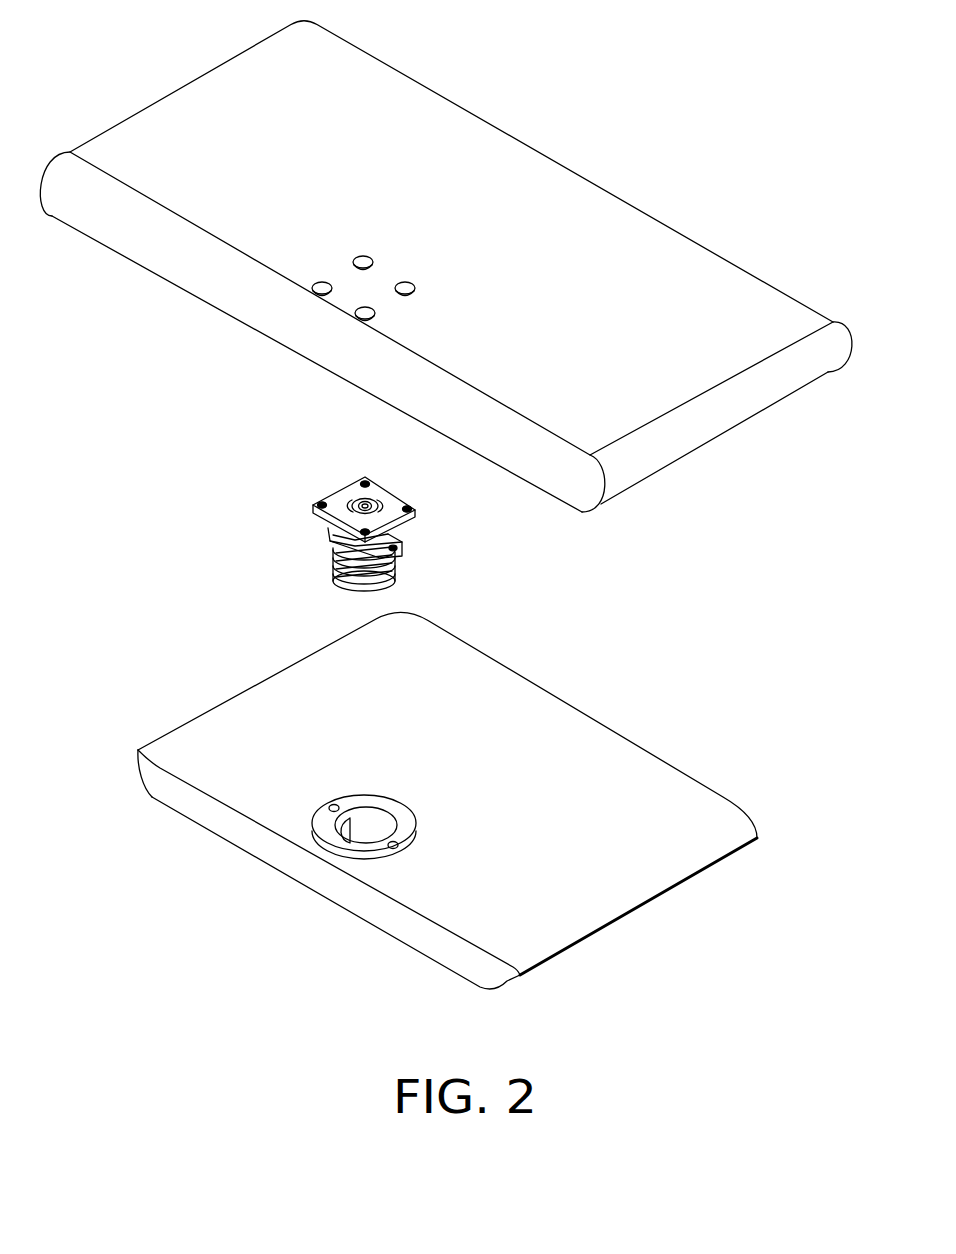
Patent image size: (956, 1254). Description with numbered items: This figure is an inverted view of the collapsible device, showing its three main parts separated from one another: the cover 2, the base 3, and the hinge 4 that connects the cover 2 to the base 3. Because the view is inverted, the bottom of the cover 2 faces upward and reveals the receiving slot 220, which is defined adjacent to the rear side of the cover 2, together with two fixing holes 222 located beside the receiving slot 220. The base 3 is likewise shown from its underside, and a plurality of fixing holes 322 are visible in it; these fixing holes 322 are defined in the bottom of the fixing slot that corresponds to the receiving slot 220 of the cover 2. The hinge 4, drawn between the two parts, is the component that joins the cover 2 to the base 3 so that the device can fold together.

The cover 2 is at (270, 662).
The base 3 is at (190, 47).
The hinge 4 is at (335, 503).
The receiving slot 220 is at (372, 830).
The fixing holes 222 is at (393, 845).
The fixing holes 322 is at (369, 261).